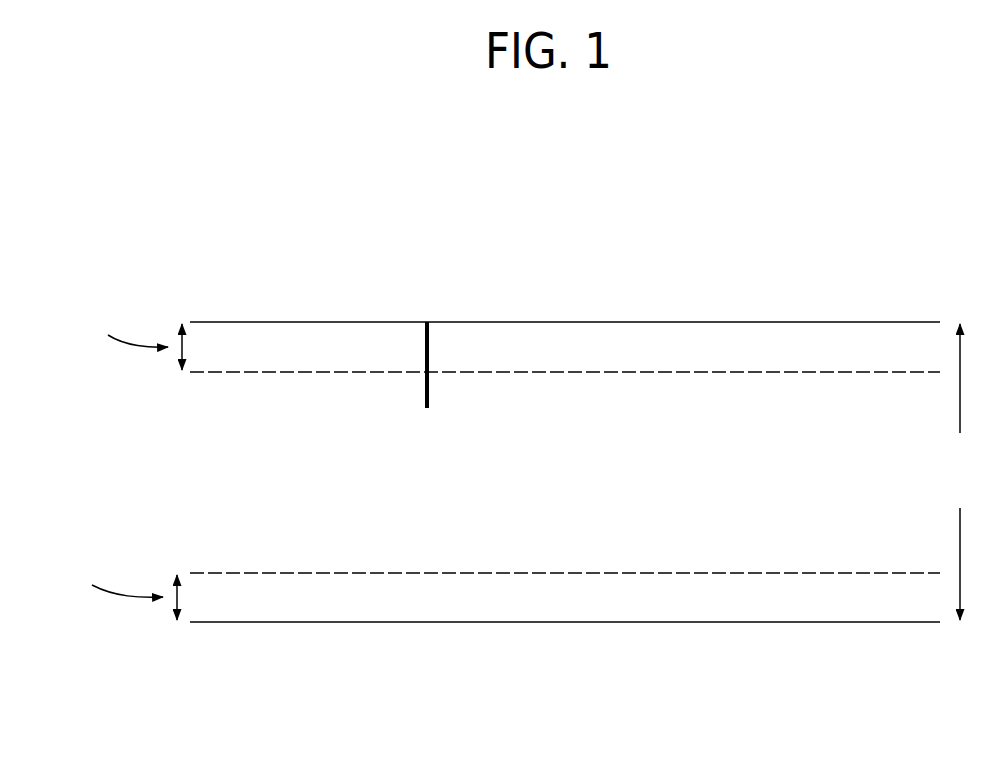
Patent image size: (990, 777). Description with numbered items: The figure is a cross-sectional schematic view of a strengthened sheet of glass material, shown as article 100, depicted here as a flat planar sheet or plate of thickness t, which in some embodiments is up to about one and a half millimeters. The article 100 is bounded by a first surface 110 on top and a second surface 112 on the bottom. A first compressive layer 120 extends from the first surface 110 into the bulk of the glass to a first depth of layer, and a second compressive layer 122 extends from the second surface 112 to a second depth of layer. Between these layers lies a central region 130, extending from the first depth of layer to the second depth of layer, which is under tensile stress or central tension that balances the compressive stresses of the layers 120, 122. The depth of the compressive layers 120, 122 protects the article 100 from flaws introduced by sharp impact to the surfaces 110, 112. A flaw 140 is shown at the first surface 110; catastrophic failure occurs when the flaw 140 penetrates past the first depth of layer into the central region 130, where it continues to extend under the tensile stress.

The article 100 is at (573, 192).
The first surface 110 is at (690, 318).
The second surface 112 is at (678, 628).
The first compressive layer 120 is at (326, 342).
The second compressive layer 122 is at (342, 602).
The central region 130 is at (210, 472).
The flaw 140 is at (446, 346).